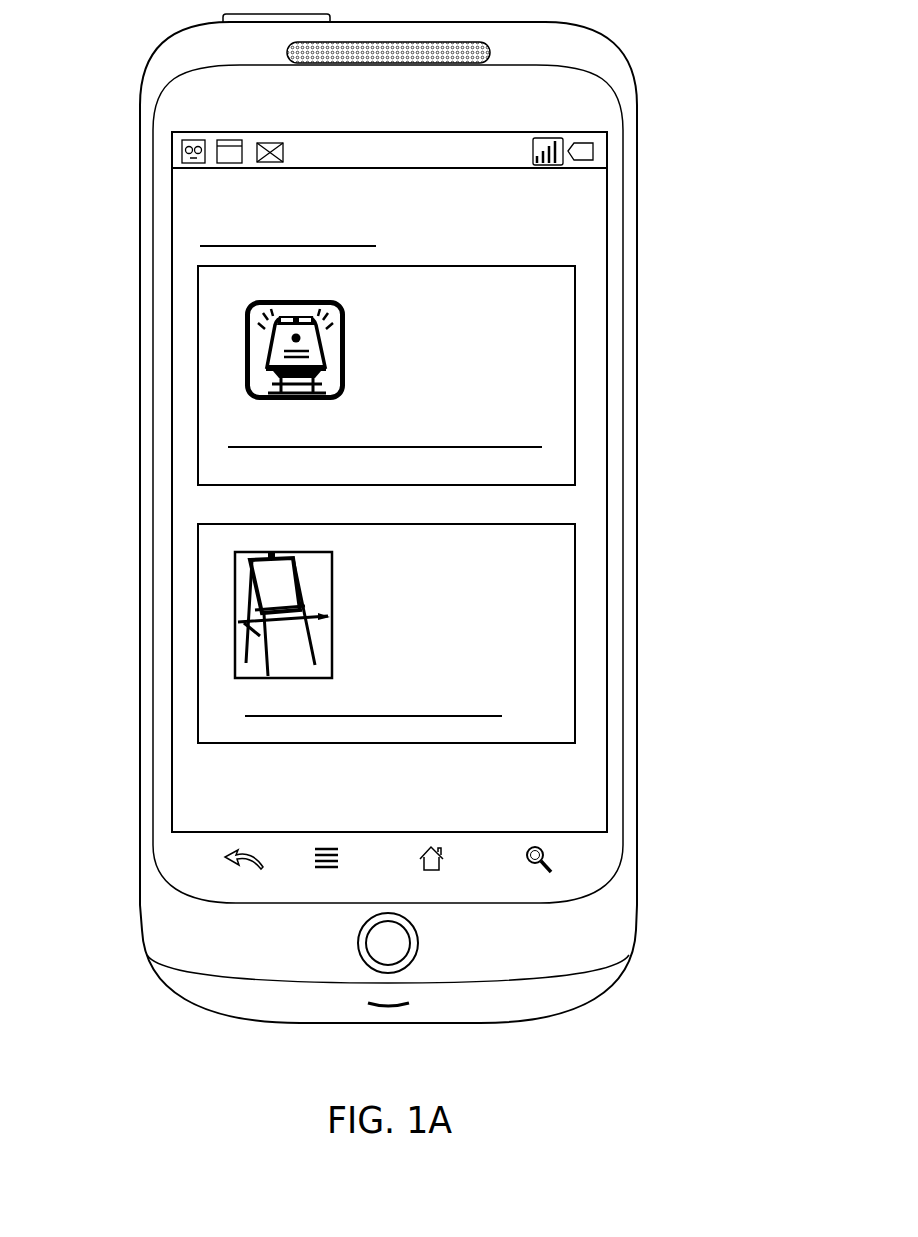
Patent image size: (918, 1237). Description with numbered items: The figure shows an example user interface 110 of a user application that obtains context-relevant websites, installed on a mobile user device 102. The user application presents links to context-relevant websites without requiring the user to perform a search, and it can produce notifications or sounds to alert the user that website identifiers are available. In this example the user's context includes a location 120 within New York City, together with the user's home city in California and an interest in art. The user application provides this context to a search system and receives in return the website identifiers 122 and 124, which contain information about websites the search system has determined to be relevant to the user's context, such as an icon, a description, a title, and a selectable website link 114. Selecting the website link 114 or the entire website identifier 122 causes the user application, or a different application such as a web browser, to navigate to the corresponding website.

The mobile user device 102 is at (635, 915).
The user interface 110 is at (650, 830).
The location 120 is at (188, 205).
The website identifier 122 is at (188, 270).
The website identifier 124 is at (427, 633).
The website link 114 is at (525, 705).